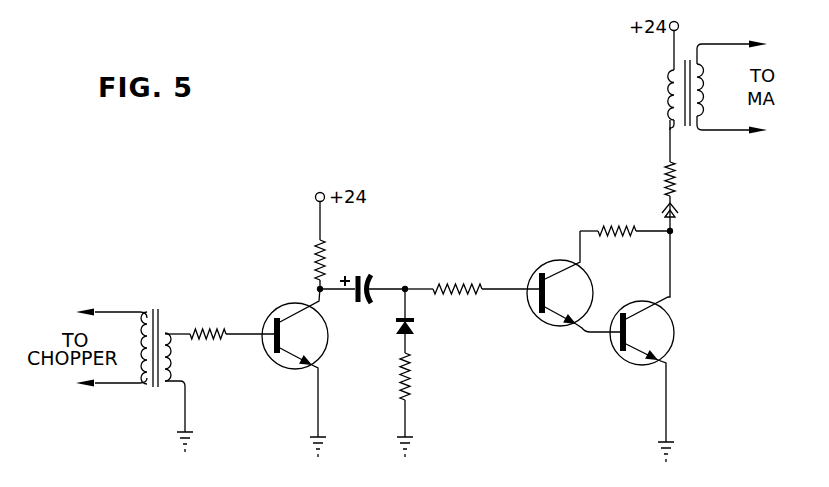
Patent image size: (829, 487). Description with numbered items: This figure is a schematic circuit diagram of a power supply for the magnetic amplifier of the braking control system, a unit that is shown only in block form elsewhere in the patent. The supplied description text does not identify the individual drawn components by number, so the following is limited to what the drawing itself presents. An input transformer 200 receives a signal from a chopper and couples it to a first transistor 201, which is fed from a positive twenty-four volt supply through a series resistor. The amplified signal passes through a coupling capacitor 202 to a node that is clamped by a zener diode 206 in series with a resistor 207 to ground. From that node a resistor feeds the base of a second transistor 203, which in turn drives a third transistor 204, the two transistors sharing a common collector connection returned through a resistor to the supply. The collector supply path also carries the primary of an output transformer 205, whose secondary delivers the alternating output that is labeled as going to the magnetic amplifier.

The input transformer 200 is at (162, 436).
The transistor 201 is at (300, 369).
The capacitor 202 is at (369, 284).
The transistor 203 is at (536, 322).
The transistor 204 is at (675, 322).
The output transformer 205 is at (687, 130).
The zener diode 206 is at (412, 324).
The resistor 207 is at (411, 382).